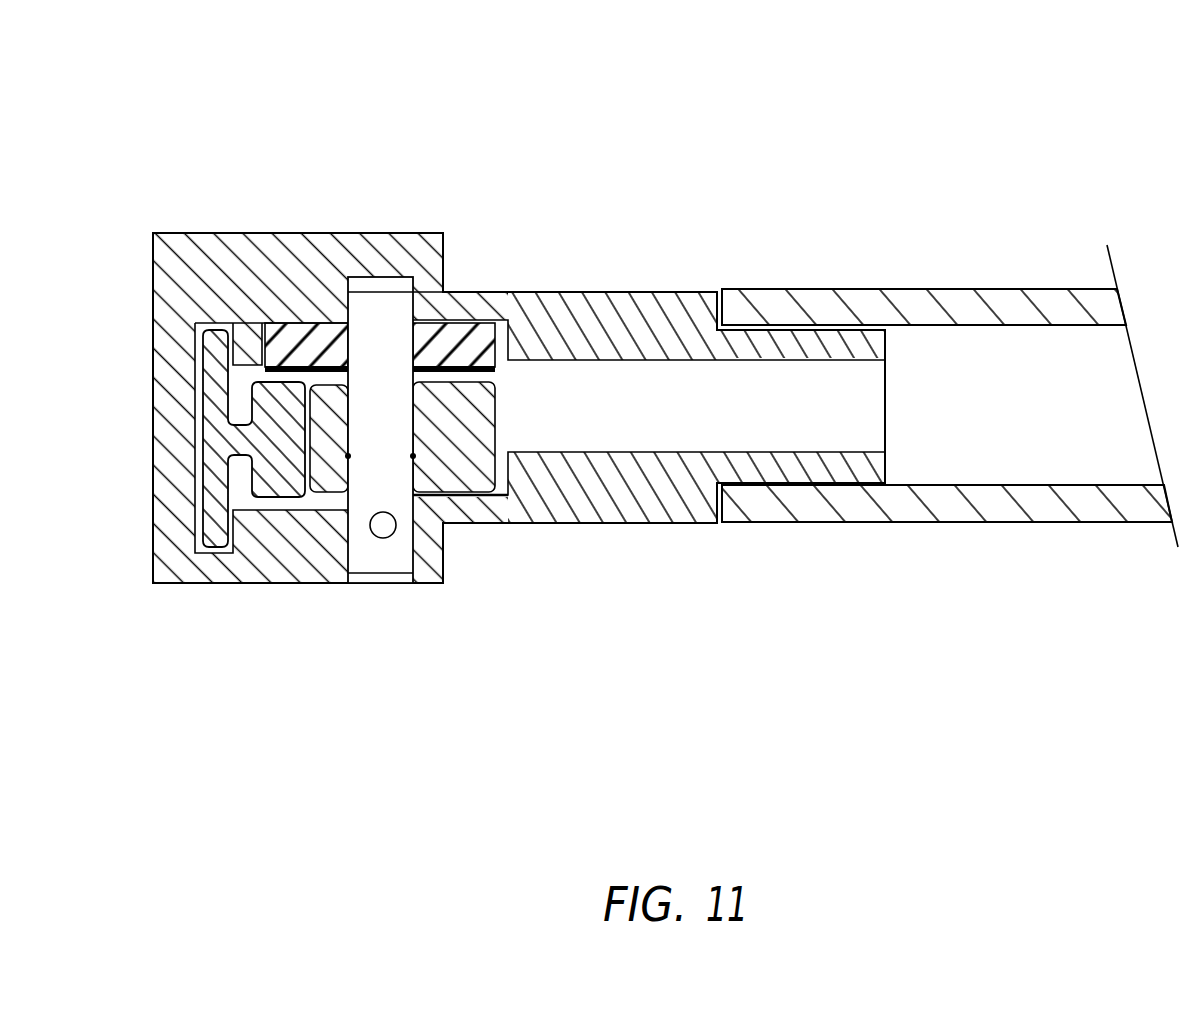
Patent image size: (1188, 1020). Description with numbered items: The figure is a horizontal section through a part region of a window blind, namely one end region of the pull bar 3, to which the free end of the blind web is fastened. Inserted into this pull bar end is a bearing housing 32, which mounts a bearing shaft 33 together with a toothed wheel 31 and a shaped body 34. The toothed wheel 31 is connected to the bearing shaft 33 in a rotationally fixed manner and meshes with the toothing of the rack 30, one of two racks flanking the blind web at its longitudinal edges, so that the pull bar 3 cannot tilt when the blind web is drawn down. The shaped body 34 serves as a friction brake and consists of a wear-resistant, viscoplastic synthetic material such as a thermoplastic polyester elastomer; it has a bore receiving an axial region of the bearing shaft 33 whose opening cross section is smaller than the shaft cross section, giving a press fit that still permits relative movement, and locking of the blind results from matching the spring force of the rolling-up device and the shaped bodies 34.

The pull bar 3 is at (908, 298).
The rack 30 is at (218, 438).
The toothed wheel 31 is at (337, 457).
The bearing housing 32 is at (230, 252).
The bearing shaft 33 is at (377, 563).
The shaped body 34 is at (455, 330).